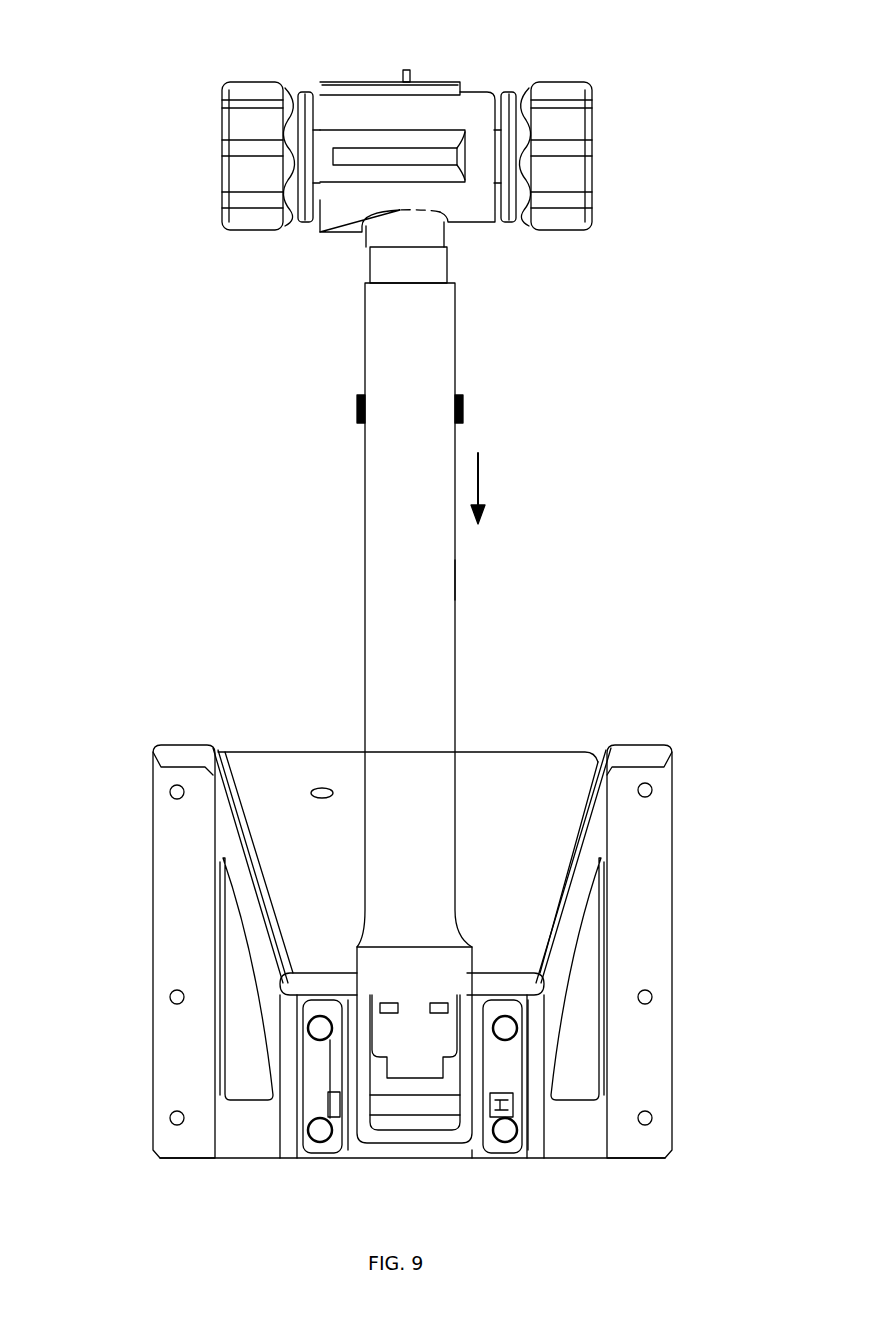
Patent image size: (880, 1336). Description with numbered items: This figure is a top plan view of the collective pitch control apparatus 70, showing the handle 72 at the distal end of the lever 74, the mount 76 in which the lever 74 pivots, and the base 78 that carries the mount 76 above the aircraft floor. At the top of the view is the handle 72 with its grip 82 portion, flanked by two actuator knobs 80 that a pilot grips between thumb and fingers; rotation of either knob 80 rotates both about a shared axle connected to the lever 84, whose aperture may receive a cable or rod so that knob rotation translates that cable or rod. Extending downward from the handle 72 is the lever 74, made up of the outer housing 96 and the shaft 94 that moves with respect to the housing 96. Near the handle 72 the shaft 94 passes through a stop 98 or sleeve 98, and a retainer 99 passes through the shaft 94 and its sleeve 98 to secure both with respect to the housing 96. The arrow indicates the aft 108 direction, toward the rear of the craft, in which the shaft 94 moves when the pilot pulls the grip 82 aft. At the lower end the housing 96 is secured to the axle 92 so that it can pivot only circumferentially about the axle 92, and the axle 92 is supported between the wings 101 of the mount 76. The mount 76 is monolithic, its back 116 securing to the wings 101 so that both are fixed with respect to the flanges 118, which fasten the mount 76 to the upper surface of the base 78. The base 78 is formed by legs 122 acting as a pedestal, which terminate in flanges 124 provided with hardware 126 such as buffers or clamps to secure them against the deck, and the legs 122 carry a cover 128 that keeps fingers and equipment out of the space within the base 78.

The apparatus 70 is at (106, 52).
The handle 72 is at (490, 230).
The lever 74 is at (466, 575).
The mount 76 is at (478, 1163).
The base 78 is at (655, 735).
The actuator knob 80 is at (242, 178).
The grip 82 is at (338, 224).
The lever 84 is at (412, 75).
The axle 92 is at (393, 1140).
The shaft 94 is at (380, 232).
The housing 96 is at (367, 324).
The stop 98 is at (382, 265).
The retainer 99 is at (465, 404).
The wings 101 is at (493, 1125).
The aft direction 108 is at (484, 480).
The back 116 is at (415, 1160).
The flanges 118 is at (315, 1147).
The legs 122 is at (262, 946).
The flanges 124 is at (170, 757).
The hardware 126 is at (163, 873).
The cover 128 is at (507, 762).